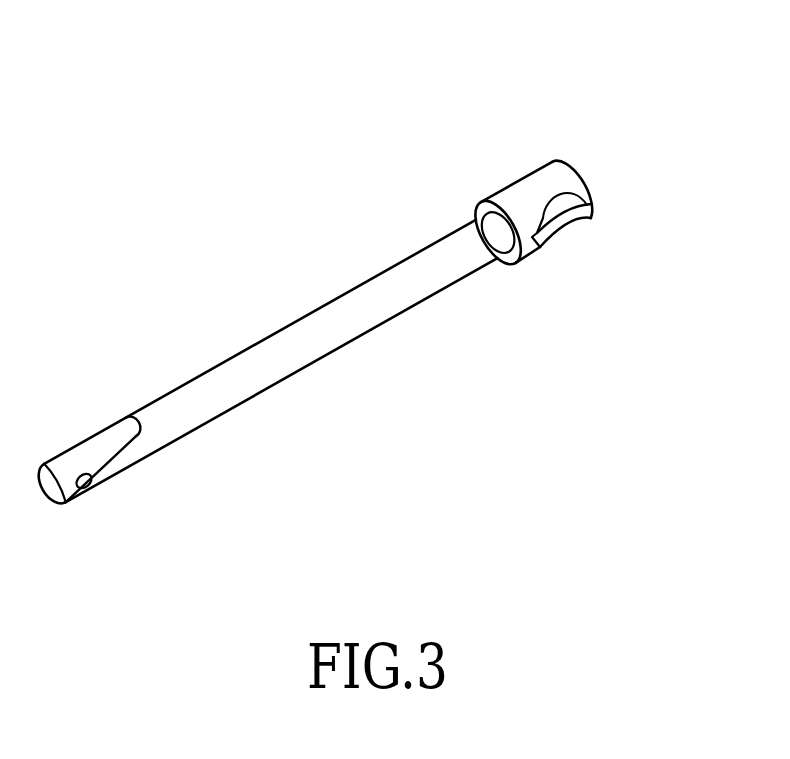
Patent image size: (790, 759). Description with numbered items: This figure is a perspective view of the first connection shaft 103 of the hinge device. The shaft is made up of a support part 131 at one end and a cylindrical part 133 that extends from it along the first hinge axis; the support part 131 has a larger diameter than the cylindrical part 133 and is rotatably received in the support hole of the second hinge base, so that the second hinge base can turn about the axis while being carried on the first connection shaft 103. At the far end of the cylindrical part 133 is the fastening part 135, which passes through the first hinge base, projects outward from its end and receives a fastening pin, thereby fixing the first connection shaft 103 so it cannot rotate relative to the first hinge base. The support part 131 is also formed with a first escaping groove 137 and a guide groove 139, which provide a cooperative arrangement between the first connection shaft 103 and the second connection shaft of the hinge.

The first connection shaft 103 is at (153, 85).
The support part 131 is at (525, 192).
The cylindrical part 133 is at (300, 333).
The fastening part 135 is at (115, 472).
The first escaping groove 137 is at (566, 181).
The guide groove 139 is at (574, 221).